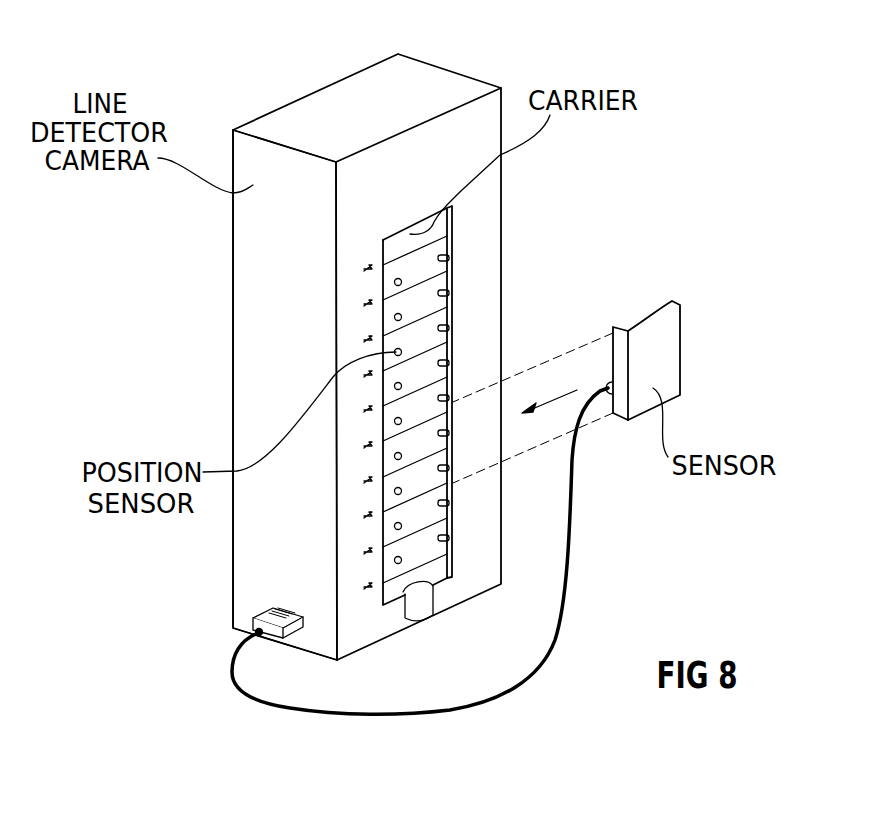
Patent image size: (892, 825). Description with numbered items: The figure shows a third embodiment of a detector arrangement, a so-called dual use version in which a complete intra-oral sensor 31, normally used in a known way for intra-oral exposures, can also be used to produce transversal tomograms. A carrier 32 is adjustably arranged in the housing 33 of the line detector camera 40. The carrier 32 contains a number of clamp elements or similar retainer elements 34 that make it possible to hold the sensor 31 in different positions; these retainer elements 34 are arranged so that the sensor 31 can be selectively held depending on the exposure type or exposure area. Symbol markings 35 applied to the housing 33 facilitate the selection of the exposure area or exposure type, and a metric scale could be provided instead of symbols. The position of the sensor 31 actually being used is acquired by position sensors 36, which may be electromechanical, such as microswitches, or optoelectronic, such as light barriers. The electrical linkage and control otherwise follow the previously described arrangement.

The line detector camera 40 is at (358, 113).
The housing 33 is at (280, 390).
The carrier 32 is at (383, 265).
The retainer elements 34 is at (450, 293).
The position sensors 36 is at (401, 316).
The symbol markings 35 is at (367, 269).
The intra-oral sensor 31 is at (648, 312).